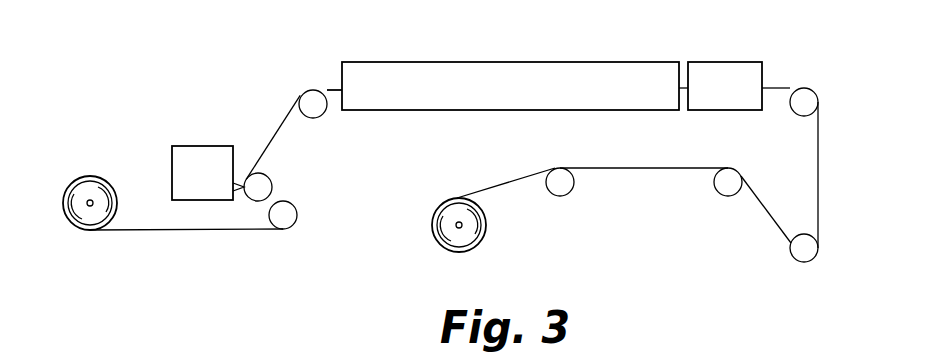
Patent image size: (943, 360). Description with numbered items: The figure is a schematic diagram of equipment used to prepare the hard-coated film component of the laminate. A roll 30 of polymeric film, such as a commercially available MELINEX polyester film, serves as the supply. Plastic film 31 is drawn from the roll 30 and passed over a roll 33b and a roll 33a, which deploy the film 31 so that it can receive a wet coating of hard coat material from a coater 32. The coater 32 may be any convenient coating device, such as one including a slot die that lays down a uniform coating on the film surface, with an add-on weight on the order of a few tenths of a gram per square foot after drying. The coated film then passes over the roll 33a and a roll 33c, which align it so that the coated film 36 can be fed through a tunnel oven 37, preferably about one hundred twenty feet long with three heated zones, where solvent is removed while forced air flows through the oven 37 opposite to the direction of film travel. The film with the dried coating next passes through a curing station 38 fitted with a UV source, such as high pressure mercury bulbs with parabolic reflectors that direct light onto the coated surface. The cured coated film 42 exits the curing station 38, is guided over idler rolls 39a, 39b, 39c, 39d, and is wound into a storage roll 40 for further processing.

The roll of polymeric film 30 is at (100, 181).
The plastic film 31 is at (139, 228).
The coater 32 is at (190, 155).
The roll 33a is at (267, 180).
The roll 33b is at (288, 222).
The roll 33c is at (307, 97).
The coated film 36 is at (329, 88).
The tunnel oven 37 is at (490, 65).
The curing station 38 is at (728, 65).
The idler roll 39a is at (808, 97).
The idler roll 39b is at (808, 250).
The idler roll 39c is at (727, 188).
The idler roll 39d is at (565, 187).
The storage roll 40 is at (447, 243).
The coated film 42 is at (500, 183).